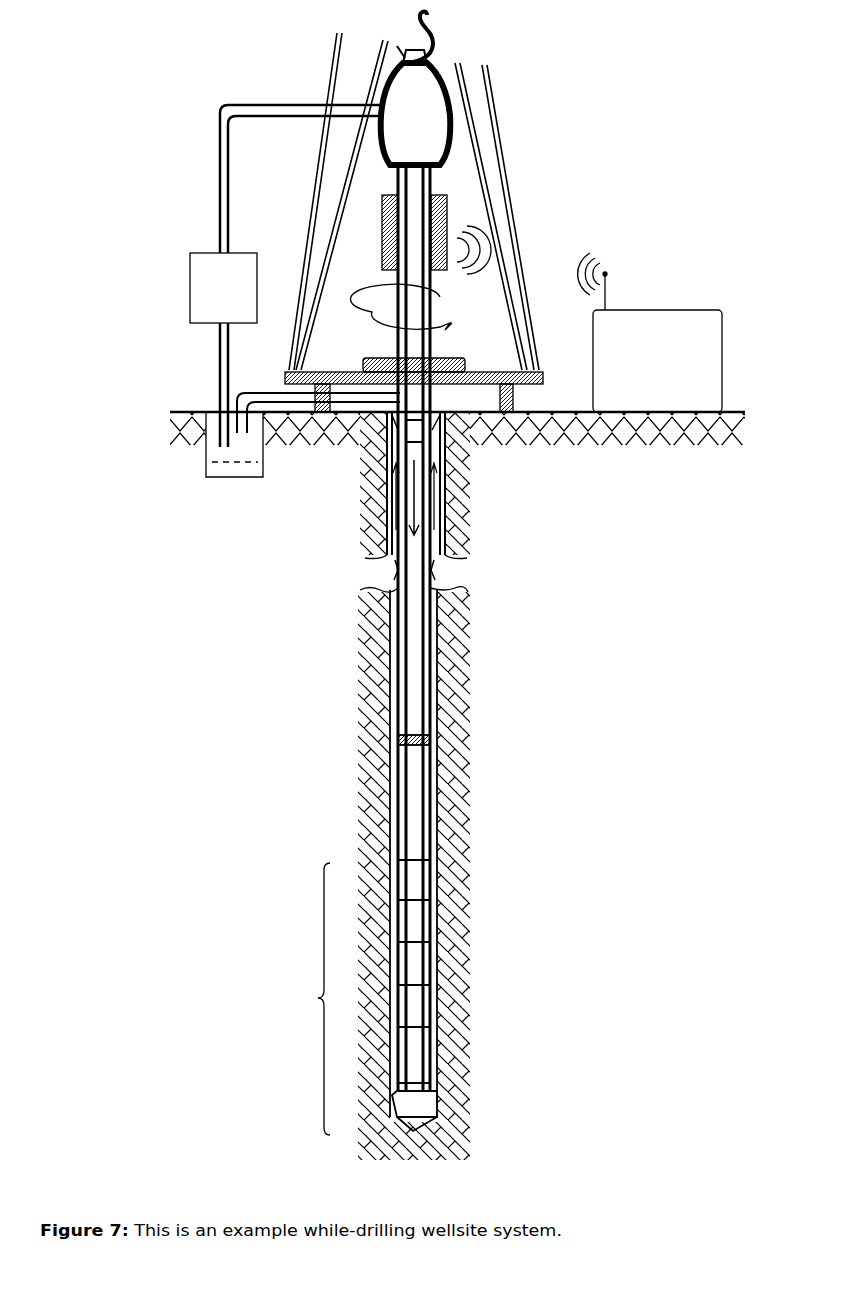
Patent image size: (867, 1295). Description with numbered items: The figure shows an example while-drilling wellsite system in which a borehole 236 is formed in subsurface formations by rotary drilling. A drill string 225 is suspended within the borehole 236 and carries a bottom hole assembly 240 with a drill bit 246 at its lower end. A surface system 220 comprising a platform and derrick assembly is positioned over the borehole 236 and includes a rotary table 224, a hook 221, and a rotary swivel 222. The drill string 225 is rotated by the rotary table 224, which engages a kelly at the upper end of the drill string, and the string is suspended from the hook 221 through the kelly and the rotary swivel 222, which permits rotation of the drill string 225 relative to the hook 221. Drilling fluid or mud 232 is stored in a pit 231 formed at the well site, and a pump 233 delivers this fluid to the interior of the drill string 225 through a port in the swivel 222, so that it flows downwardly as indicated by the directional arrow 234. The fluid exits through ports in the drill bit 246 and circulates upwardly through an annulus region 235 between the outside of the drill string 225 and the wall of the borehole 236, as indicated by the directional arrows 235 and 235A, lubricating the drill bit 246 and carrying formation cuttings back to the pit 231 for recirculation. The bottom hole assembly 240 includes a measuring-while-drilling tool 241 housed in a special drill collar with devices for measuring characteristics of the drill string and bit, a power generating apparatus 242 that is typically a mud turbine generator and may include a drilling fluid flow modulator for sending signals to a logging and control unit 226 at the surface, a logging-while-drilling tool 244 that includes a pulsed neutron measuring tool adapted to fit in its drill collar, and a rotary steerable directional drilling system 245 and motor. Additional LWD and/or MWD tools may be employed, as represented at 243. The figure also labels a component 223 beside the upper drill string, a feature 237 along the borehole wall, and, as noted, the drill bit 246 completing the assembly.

The surface system 220 is at (523, 102).
The hook 221 is at (413, 23).
The rotary swivel 222 is at (410, 147).
The kelly 223 is at (410, 343).
The rotary table 224 is at (437, 366).
The drill string 225 is at (408, 425).
The logging and control unit 226 is at (653, 310).
The pit 231 is at (237, 472).
The drilling fluid or mud 232 is at (210, 410).
The pump 233 is at (197, 328).
The directional arrow 234 is at (391, 491).
The annulus region 235 is at (398, 484).
The directional arrow 235A is at (440, 503).
The borehole 236 is at (438, 418).
The borehole 237 is at (457, 642).
The bottom hole assembly 240 is at (318, 998).
The measuring-while-drilling tool 241 is at (415, 882).
The power generating apparatus 242 is at (415, 922).
The additional LWD and/or MWD tool 243 is at (415, 967).
The logging-while-drilling tool 244 is at (415, 1005).
The rotary steerable directional drilling system 245 is at (415, 1052).
The drill bit 246 is at (415, 1097).